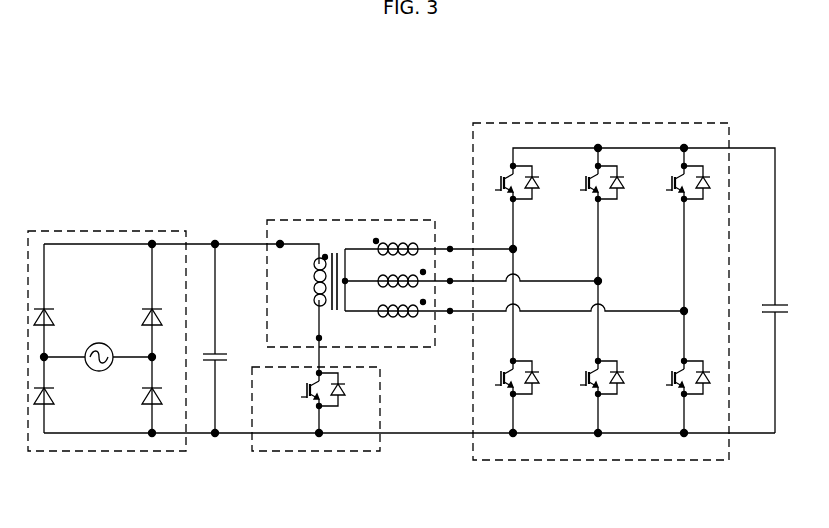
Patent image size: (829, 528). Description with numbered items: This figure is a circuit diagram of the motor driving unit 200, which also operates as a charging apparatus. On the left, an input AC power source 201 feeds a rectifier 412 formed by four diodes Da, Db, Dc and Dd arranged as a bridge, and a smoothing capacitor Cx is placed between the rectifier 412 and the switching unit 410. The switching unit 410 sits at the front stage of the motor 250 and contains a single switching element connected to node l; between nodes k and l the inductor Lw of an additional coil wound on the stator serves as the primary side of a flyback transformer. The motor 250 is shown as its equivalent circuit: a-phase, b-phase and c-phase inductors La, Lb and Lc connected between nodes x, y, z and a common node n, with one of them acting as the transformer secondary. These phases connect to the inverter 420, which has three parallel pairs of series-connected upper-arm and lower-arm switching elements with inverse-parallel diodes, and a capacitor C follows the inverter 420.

The motor driving unit 200 is at (84, 126).
The input AC power source 201 is at (98, 343).
The motor 250 is at (398, 220).
The switching unit 410 is at (363, 451).
The rectifier 412 is at (153, 451).
The inverter 420 is at (698, 123).